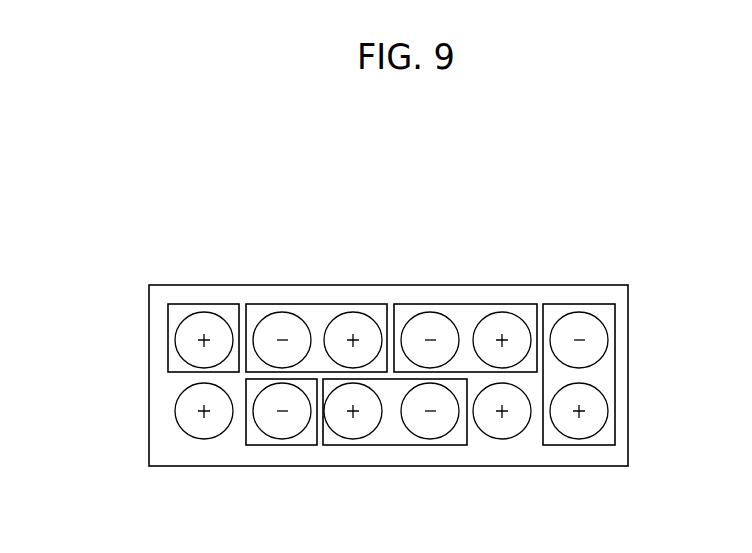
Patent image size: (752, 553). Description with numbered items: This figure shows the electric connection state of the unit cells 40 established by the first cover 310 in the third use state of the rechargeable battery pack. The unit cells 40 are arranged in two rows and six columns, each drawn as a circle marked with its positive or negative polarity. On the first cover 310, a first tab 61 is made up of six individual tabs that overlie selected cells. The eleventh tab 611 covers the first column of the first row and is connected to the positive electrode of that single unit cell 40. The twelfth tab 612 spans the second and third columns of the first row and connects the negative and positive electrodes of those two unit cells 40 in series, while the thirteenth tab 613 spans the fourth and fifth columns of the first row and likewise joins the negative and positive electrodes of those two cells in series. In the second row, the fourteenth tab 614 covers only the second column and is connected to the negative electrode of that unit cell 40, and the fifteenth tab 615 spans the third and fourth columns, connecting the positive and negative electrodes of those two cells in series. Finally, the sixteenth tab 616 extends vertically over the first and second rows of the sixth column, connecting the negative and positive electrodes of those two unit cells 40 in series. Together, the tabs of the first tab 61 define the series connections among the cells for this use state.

The first cover 310 is at (553, 285).
The first tab 61 is at (72, 266).
The eleventh tab 611 is at (211, 304).
The twelfth tab 612 is at (317, 304).
The thirteenth tab 613 is at (464, 304).
The fourteenth tab 614 is at (302, 445).
The fifteenth tab 615 is at (398, 445).
The sixteenth tab 616 is at (573, 445).
The unit cell 40 is at (222, 439).